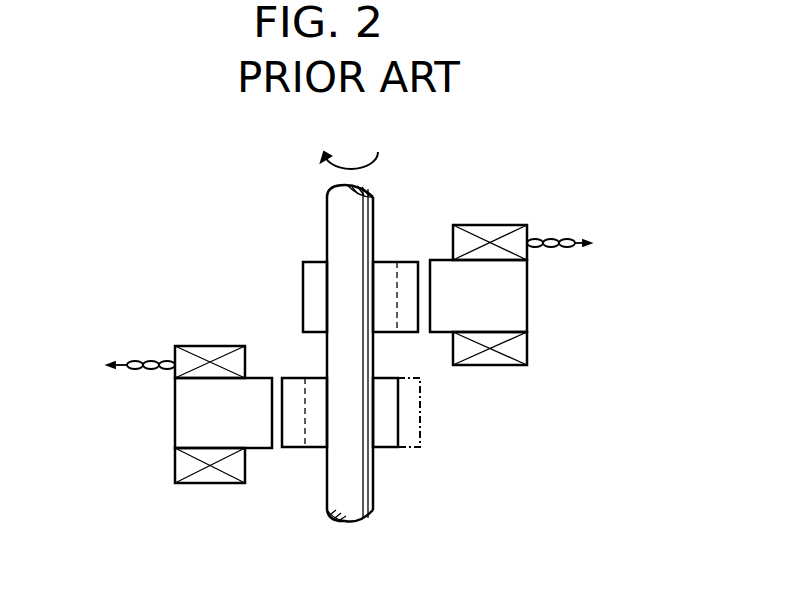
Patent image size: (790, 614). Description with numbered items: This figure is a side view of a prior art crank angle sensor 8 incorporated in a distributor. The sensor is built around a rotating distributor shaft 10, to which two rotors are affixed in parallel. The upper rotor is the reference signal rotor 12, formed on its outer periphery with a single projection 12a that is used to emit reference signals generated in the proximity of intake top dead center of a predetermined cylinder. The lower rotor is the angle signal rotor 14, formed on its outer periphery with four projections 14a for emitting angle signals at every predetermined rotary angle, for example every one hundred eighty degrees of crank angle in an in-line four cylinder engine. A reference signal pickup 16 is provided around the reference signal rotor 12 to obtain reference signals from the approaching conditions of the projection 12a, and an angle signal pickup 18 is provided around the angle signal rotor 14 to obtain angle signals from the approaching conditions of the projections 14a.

The crank angle sensor 8 is at (432, 170).
The distributor shaft 10 is at (373, 505).
The reference signal rotor 12 is at (303, 270).
The projection 12a is at (408, 262).
The angle signal rotor 14 is at (388, 449).
The projections 14a is at (285, 449).
The reference signal pickup 16 is at (527, 351).
The angle signal pickup 18 is at (175, 466).